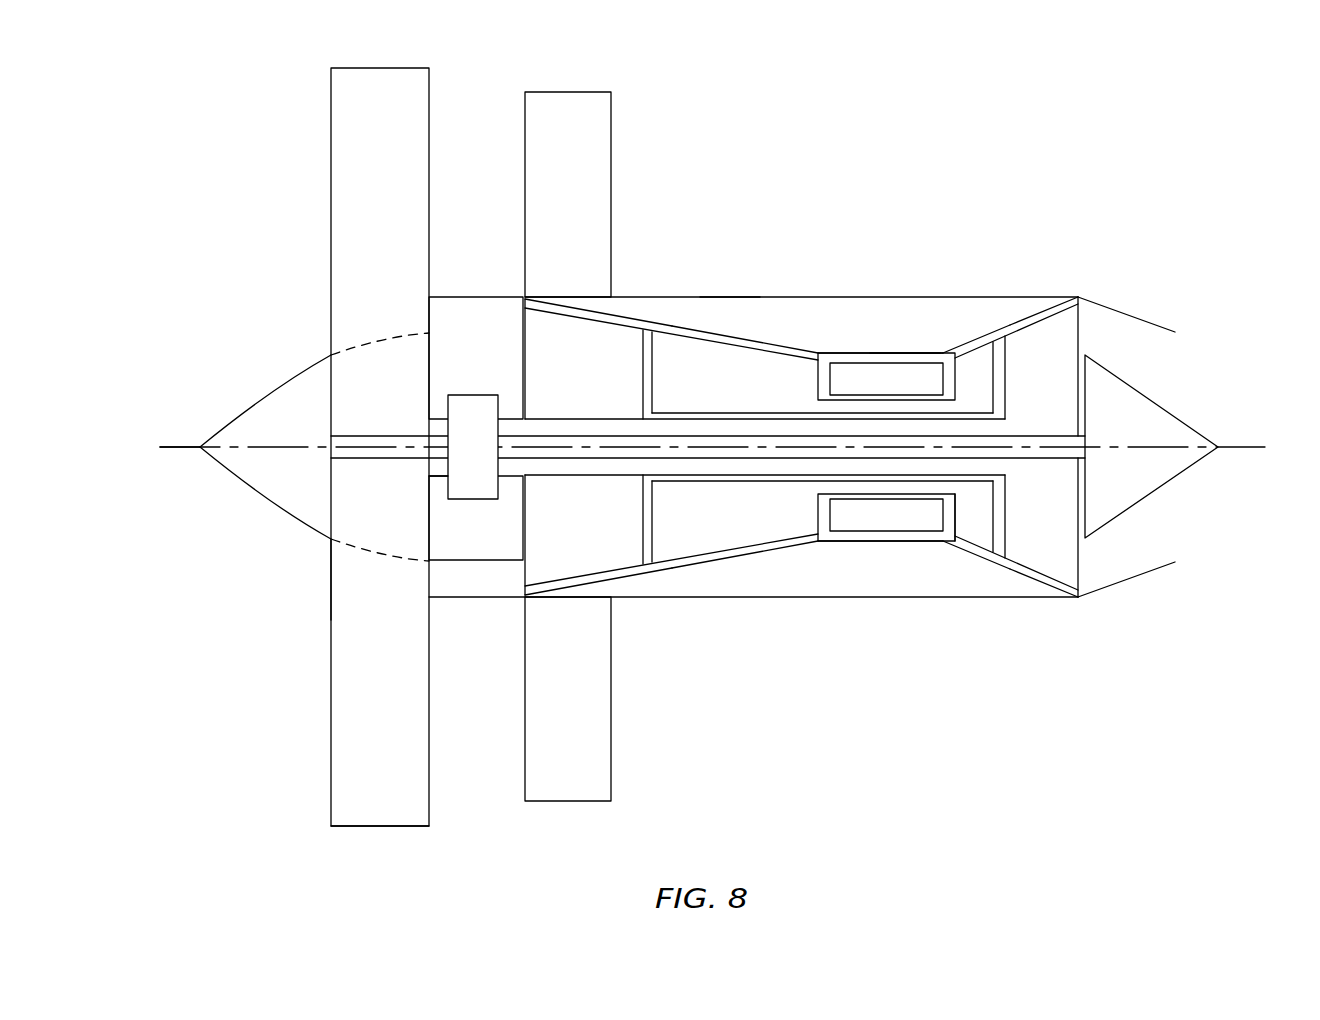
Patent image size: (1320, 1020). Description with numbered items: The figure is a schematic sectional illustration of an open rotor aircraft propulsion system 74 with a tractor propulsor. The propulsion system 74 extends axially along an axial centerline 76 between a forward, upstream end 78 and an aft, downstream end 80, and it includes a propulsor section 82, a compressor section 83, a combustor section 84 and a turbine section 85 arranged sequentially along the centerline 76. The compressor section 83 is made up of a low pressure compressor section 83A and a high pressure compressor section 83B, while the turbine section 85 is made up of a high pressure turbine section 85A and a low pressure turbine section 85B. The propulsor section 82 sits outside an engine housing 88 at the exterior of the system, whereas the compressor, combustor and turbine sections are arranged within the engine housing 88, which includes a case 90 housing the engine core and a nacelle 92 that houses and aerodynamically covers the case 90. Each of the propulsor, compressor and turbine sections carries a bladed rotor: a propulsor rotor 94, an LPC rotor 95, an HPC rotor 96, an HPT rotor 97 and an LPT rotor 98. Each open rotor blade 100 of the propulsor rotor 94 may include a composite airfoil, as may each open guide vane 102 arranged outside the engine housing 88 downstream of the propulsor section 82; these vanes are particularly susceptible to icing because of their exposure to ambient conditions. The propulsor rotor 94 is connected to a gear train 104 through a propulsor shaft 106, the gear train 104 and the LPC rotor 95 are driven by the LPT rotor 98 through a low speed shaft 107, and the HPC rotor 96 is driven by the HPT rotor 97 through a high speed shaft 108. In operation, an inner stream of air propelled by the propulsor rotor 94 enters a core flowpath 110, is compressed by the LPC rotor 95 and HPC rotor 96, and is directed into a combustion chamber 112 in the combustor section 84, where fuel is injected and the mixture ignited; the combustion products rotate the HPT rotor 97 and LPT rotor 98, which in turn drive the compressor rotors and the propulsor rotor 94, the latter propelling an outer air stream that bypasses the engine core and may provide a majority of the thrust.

The open rotor aircraft propulsion system 74 is at (208, 108).
The axial centerline 76 is at (172, 449).
The forward, upstream end 78 is at (200, 446).
The aft, downstream end 80 is at (1222, 446).
The propulsor section 82 is at (312, 850).
The compressor section 83 is at (671, 428).
The low pressure compressor section 83A is at (617, 577).
The high pressure compressor section 83B is at (737, 550).
The combustor section 84 is at (900, 345).
The turbine section 85 is at (1009, 445).
The high pressure turbine section 85A is at (970, 550).
The low pressure turbine section 85B is at (1038, 573).
The engine housing 88 is at (727, 283).
The case 90 is at (803, 348).
The nacelle 92 is at (787, 297).
The propulsor rotor 94 is at (331, 576).
The LPC rotor 95 is at (523, 528).
The HPC rotor 96 is at (643, 537).
The HPT rotor 97 is at (945, 515).
The LPT rotor 98 is at (1078, 558).
The open rotor blade 100 is at (331, 213).
The open guide vane 102 is at (612, 158).
The gear train 104 is at (476, 394).
The propulsor shaft 106 is at (438, 478).
The low speed shaft 107 is at (770, 417).
The high speed shaft 108 is at (848, 400).
The core flowpath 110 is at (493, 327).
The combustion chamber 112 is at (905, 382).